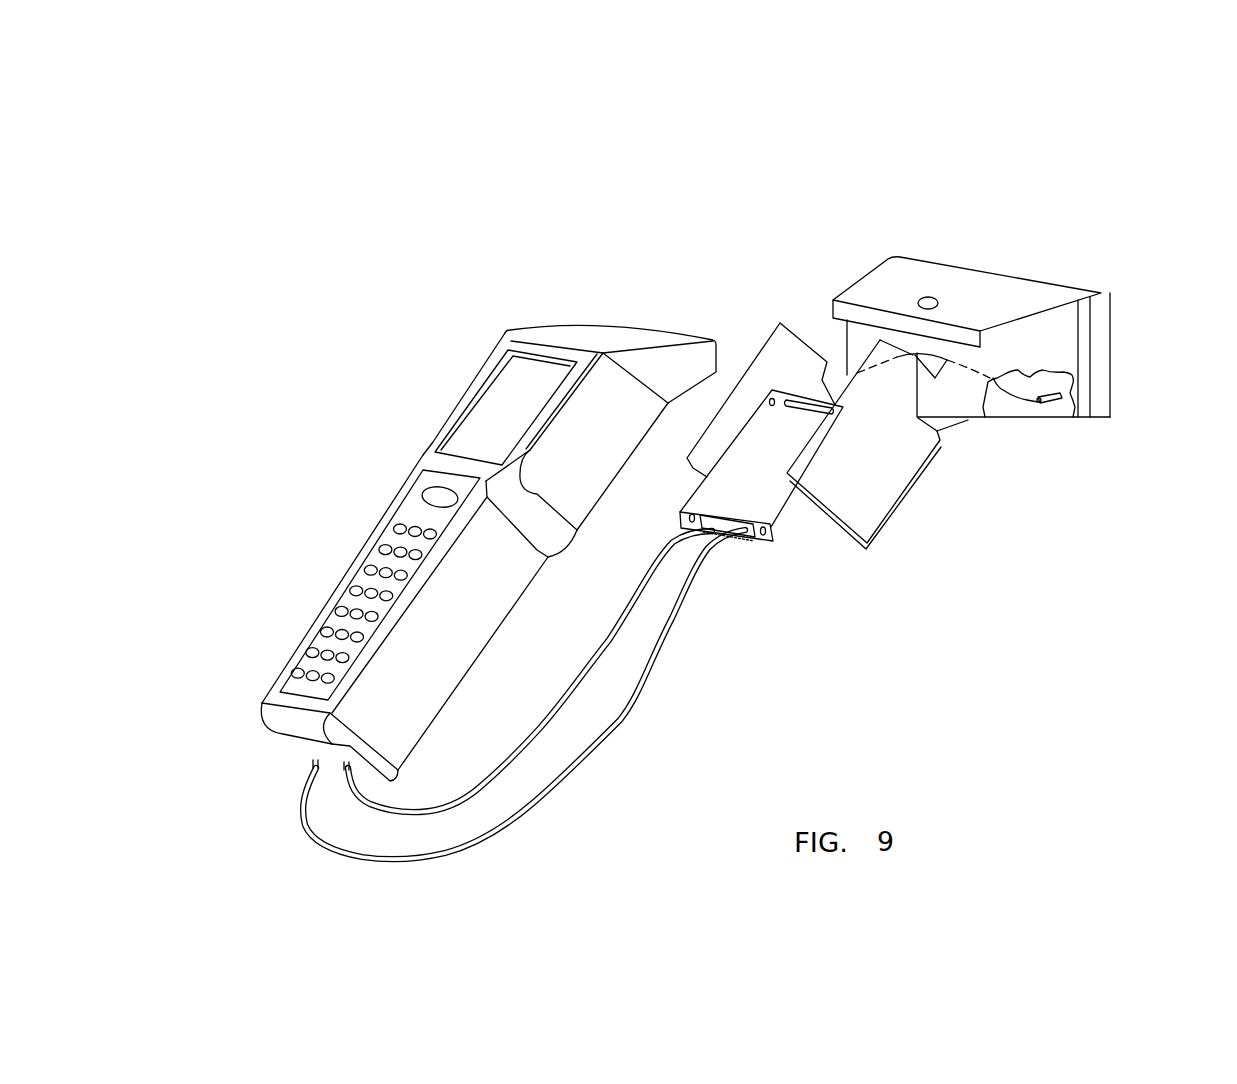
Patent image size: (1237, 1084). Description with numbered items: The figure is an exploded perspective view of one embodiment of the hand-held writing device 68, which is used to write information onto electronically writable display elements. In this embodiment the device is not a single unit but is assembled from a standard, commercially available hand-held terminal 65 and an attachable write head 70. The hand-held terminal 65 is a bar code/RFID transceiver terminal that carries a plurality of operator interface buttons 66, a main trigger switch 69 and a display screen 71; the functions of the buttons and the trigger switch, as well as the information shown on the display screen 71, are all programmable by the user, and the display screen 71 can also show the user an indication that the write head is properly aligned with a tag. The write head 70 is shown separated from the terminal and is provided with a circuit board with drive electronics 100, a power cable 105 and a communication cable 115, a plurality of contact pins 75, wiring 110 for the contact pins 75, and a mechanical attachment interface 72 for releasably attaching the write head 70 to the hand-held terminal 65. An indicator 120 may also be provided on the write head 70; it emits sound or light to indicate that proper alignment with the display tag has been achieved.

The hand-held writing device 68 is at (648, 169).
The operator interface buttons 66 is at (326, 604).
The hand-held terminal 65 is at (443, 417).
The display screen 71 is at (502, 373).
The main trigger switch 69 is at (430, 497).
The mechanical attachment interface 72 is at (763, 343).
The wiring 110 is at (936, 380).
The circuit board with drive electronics 100 is at (777, 548).
The communication cable 115 is at (630, 607).
The power cable 105 is at (617, 720).
The write head 70 is at (1101, 292).
The indicator 120 is at (935, 294).
The contact pins 75 is at (1053, 402).